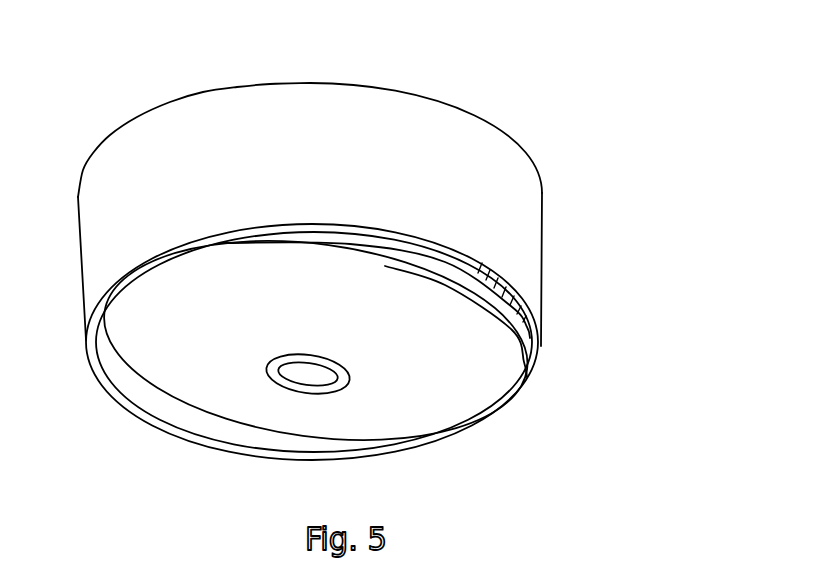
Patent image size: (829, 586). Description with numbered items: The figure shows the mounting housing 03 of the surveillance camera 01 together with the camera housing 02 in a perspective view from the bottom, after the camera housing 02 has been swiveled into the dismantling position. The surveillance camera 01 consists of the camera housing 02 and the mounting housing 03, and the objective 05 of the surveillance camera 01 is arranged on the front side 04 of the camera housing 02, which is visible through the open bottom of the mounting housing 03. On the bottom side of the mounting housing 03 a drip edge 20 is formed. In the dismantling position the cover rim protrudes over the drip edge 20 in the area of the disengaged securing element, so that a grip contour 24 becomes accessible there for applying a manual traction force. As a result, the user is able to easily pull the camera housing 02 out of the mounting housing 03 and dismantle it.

The surveillance camera 01 is at (361, 176).
The camera housing 02 is at (480, 403).
The mounting housing 03 is at (537, 227).
The front side 04 is at (215, 398).
The objective 05 is at (325, 381).
The drip edge 20 is at (537, 346).
The grip contour 24 is at (525, 380).